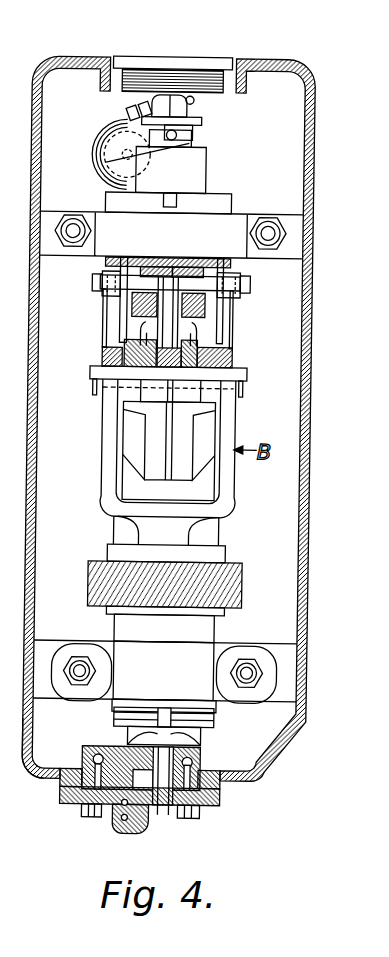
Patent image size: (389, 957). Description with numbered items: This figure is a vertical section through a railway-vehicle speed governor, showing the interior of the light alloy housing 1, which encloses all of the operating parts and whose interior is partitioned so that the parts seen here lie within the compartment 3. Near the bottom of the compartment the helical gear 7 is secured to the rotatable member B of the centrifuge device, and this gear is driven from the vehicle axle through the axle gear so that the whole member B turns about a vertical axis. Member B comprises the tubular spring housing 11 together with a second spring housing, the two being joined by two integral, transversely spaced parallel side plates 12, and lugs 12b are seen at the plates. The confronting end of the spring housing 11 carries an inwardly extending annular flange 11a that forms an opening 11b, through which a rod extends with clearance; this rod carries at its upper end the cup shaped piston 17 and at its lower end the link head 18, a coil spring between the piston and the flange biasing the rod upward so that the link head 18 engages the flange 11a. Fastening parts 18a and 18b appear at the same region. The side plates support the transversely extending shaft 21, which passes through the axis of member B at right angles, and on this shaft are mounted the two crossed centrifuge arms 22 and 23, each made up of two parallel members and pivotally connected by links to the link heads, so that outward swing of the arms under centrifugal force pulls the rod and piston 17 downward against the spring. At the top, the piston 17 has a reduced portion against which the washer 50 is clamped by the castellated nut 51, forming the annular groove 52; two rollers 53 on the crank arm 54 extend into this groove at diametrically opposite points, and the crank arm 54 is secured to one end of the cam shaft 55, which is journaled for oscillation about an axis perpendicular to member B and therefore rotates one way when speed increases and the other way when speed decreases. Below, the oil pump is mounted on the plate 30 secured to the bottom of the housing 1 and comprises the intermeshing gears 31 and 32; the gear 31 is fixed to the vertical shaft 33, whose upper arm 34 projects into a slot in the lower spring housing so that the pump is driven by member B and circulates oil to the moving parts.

The housing 1 is at (277, 63).
The compartment 3 is at (33, 745).
The helical gear 7 is at (249, 576).
The spring housing 11 is at (105, 258).
The annular flange 11a is at (160, 267).
The opening 11b is at (186, 267).
The side plates 12 is at (107, 432).
The frame legs 12b is at (110, 338).
The cup shaped piston 17 is at (207, 172).
The link head 18 is at (137, 303).
The cross bar 18a is at (253, 287).
The nuts 18b is at (100, 277).
The shaft 21 is at (94, 379).
The centrifuge arm 22 is at (180, 333).
The centrifuge arm 23 is at (117, 352).
The plate 30 is at (230, 797).
The gear 31 is at (180, 805).
The gear 32 is at (125, 806).
The vertical shaft 33 is at (183, 757).
The arm 34 is at (195, 733).
The washer 50 is at (202, 122).
The castellated nut 51 is at (187, 109).
The annular groove 52 is at (193, 132).
The rollers 53 is at (163, 150).
The crank arm 54 is at (108, 132).
The cam shaft 55 is at (118, 173).